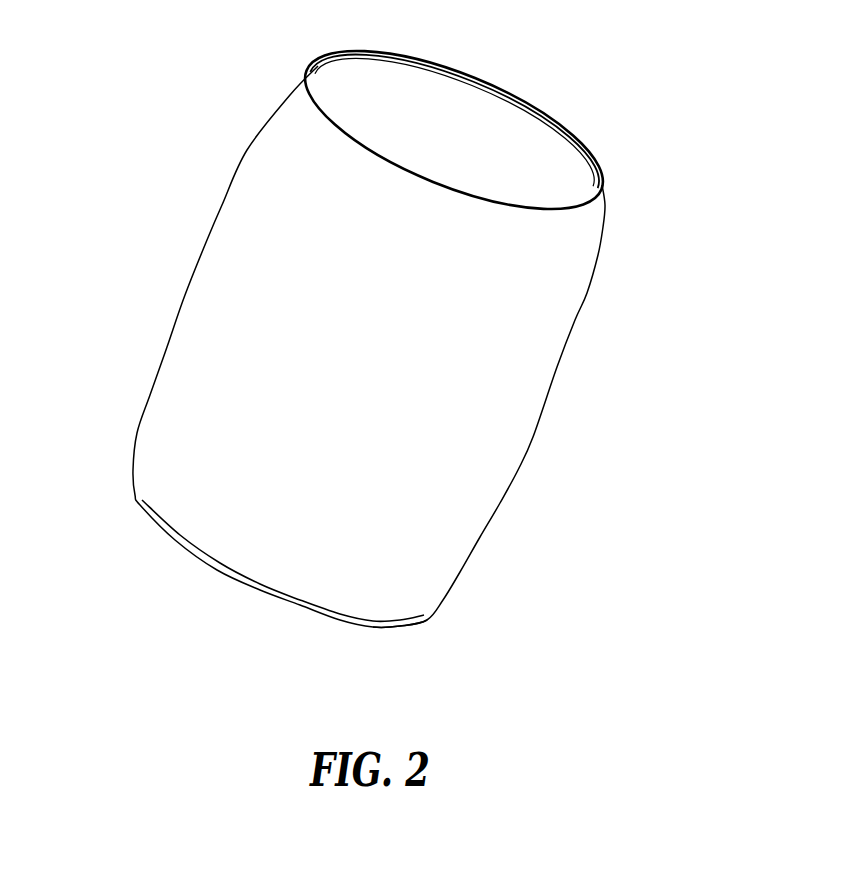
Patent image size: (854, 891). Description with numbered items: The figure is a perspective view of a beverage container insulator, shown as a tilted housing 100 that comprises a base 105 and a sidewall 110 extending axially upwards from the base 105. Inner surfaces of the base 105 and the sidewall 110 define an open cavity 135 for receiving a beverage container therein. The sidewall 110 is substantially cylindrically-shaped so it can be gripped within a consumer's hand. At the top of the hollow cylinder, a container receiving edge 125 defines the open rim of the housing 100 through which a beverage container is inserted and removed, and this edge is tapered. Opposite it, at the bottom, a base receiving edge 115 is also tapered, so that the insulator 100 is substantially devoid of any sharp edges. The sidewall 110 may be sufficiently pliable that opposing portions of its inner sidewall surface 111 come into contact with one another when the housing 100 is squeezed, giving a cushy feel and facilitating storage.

The housing 100 is at (596, 102).
The base 105 is at (213, 583).
The sidewall 110 is at (210, 320).
The inner sidewall surface 111 is at (428, 120).
The base receiving edge 115 is at (428, 620).
The container receiving edge 125 is at (603, 174).
The open cavity 135 is at (472, 127).